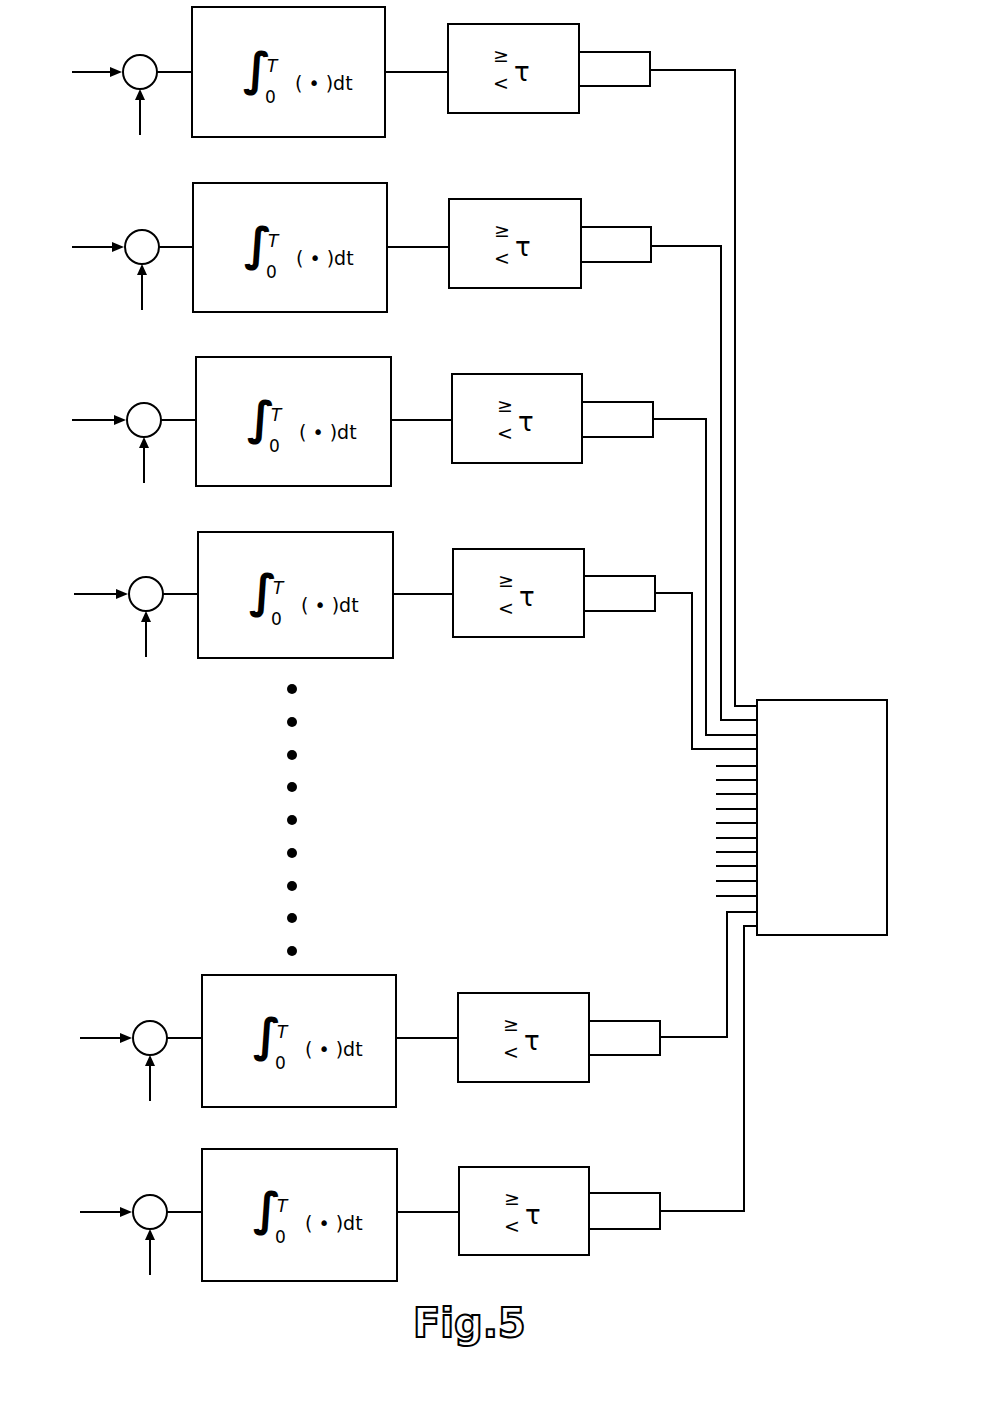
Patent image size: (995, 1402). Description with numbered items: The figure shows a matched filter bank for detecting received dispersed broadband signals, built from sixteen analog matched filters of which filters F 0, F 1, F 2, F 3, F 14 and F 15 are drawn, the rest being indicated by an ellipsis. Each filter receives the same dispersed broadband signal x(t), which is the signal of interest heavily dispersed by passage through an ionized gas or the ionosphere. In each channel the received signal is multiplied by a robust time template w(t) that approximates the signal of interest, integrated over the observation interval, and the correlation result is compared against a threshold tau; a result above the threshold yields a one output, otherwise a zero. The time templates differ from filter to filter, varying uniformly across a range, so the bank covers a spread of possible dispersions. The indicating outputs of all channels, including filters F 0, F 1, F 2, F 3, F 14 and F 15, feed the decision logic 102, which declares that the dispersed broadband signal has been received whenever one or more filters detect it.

The decision logic 102 is at (827, 699).
The analog matched filter F0 0 is at (385, 55).
The analog matched filter F1 1 is at (387, 230).
The analog matched filter F2 2 is at (391, 404).
The analog matched filter F3 3 is at (393, 579).
The analog matched filter F14 14 is at (396, 1022).
The analog matched filter F15 15 is at (397, 1196).